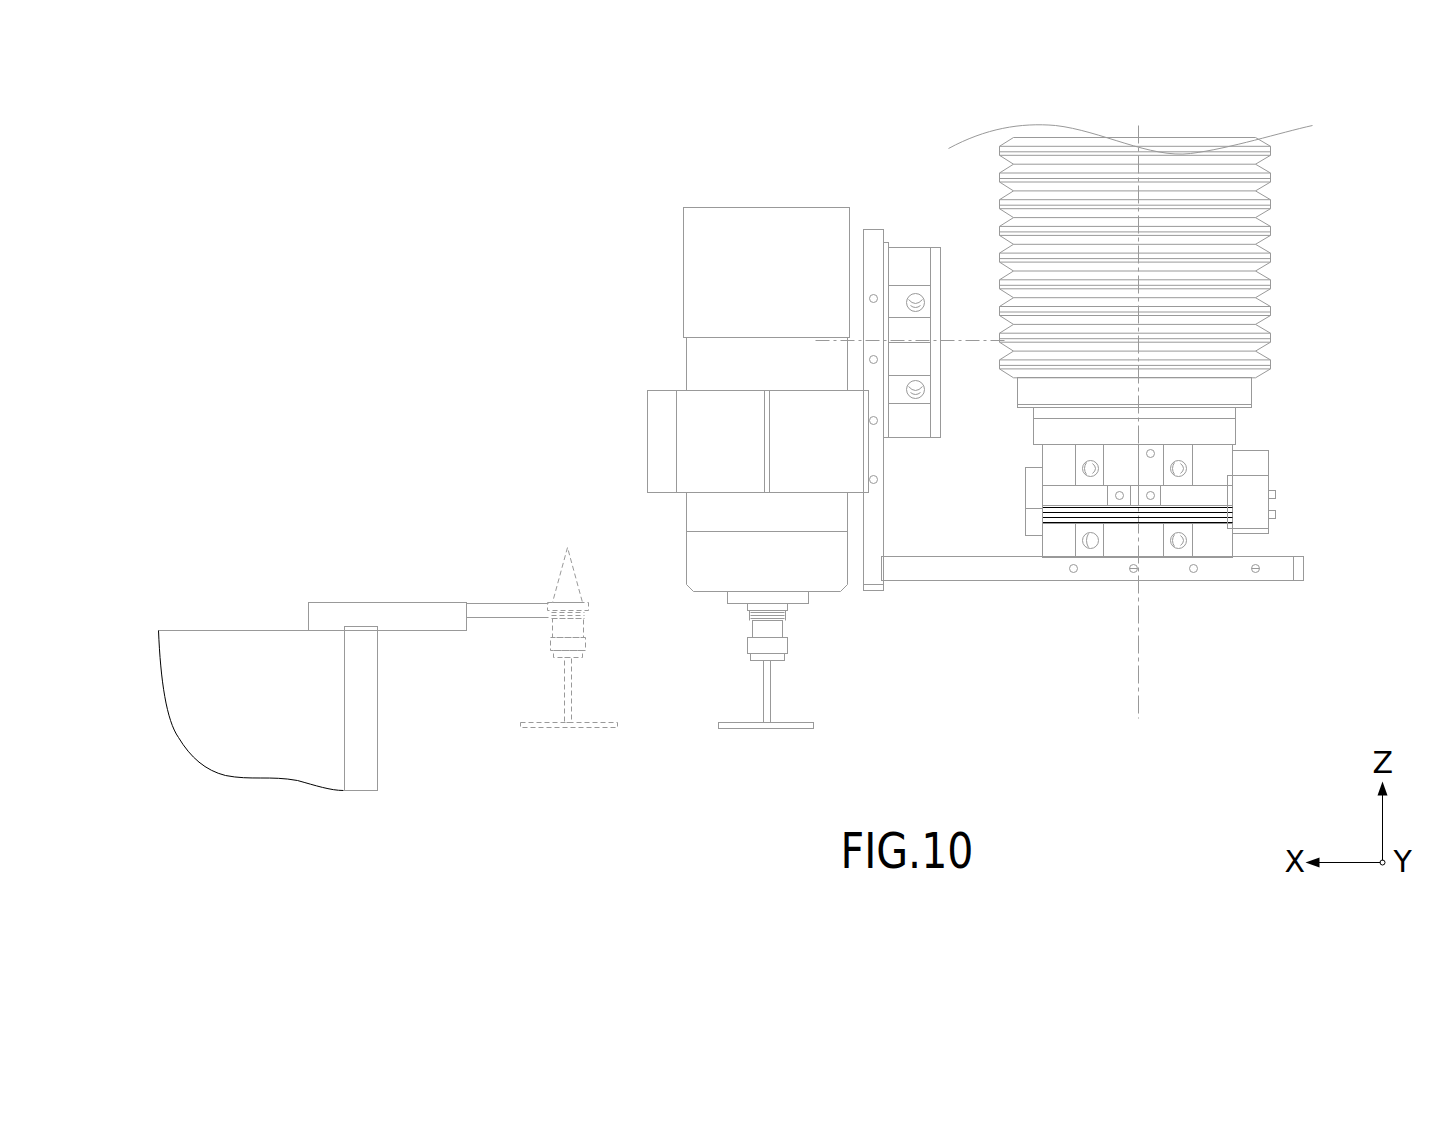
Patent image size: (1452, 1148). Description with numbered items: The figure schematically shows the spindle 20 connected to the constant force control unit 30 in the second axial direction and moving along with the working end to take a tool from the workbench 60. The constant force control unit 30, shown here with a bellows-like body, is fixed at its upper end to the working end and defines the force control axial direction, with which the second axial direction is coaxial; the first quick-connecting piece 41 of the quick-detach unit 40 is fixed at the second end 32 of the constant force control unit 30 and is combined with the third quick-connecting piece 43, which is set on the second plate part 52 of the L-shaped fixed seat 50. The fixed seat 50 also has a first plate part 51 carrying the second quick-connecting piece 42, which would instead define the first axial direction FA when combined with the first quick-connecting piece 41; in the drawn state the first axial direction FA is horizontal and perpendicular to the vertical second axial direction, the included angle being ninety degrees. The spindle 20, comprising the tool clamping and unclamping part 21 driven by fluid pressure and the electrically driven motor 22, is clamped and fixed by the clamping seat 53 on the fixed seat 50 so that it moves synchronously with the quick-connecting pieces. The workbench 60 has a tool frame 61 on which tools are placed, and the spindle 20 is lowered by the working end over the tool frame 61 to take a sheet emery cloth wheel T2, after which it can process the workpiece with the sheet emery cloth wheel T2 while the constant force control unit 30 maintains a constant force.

The spindle 20 is at (700, 503).
The tool clamping and unclamping part 21 is at (698, 322).
The motor 22 is at (702, 370).
The clamping seat 53 is at (655, 455).
The first plate part 51 is at (870, 258).
The second quick-connecting piece 42 is at (905, 263).
The first axial direction FA is at (968, 340).
The constant force control unit 30 is at (1253, 252).
The second end 32 is at (1225, 413).
The first quick-connecting piece 41 is at (1150, 468).
The third quick-connecting piece 43 is at (1180, 540).
The quick-detach unit 40 is at (1213, 556).
The fixed seat 50 is at (1039, 436).
The second plate part 52 is at (1007, 572).
The sheet emery cloth wheel T2 is at (755, 728).
The workbench 60 is at (220, 640).
The tool frame 61 is at (402, 612).